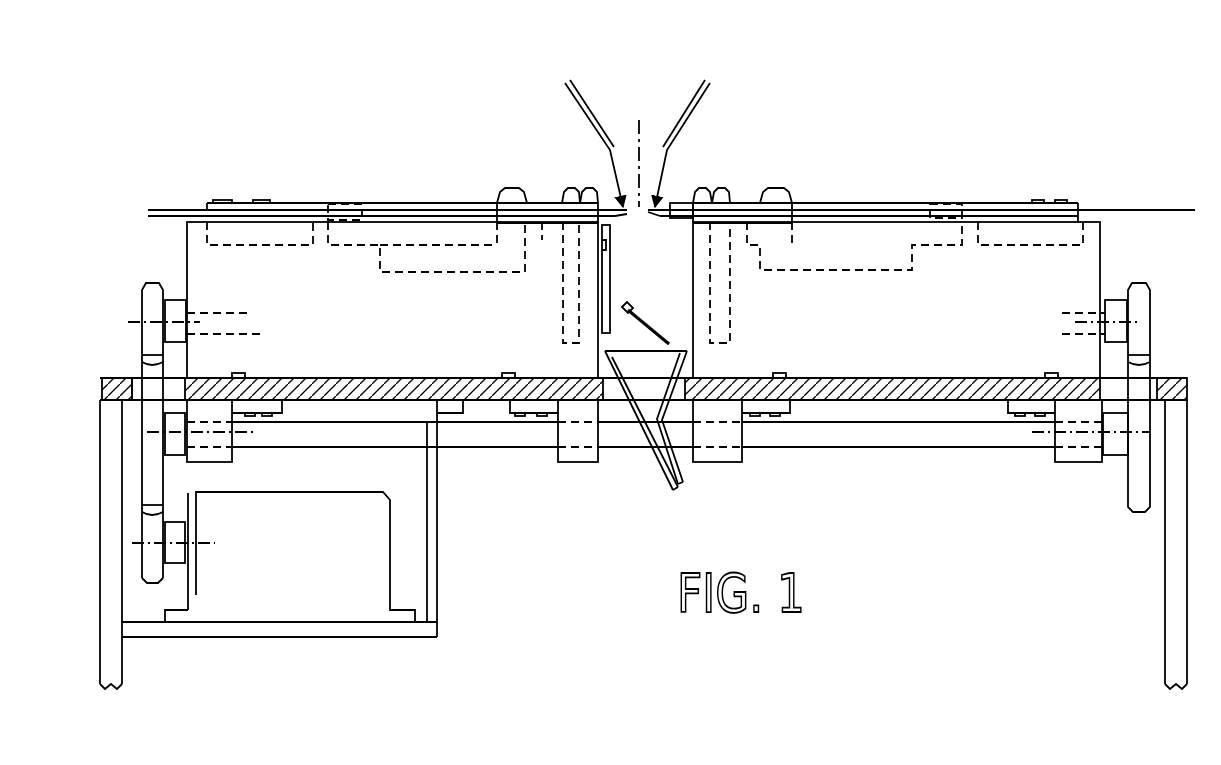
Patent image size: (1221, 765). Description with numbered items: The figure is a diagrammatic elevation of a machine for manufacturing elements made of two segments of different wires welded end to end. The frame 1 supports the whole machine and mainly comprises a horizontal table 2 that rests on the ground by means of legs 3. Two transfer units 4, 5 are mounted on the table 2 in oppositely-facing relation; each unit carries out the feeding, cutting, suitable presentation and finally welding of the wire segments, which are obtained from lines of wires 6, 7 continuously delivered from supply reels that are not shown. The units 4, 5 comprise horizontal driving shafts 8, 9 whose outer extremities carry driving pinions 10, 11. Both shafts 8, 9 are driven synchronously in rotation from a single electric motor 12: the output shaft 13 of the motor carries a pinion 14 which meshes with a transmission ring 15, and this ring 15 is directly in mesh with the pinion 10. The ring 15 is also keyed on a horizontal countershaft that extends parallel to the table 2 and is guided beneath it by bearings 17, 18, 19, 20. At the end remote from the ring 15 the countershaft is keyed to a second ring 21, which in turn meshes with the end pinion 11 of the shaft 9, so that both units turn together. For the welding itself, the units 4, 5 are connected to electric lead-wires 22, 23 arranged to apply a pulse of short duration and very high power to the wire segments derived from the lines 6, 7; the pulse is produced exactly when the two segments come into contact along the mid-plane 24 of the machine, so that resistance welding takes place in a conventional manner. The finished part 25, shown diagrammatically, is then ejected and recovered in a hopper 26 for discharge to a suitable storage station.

The frame 1 is at (1163, 377).
The horizontal table 2 is at (881, 400).
The legs 3 is at (107, 412).
The unit 4 is at (181, 249).
The unit 5 is at (1105, 257).
The line of wire 6 is at (157, 212).
The line of wire 7 is at (1114, 209).
The horizontal driving shaft 8 is at (224, 320).
The horizontal driving shaft 9 is at (1087, 315).
The driving pinion 10 is at (133, 290).
The driving pinion 11 is at (1129, 284).
The electric motor 12 is at (300, 571).
The output shaft 13 is at (172, 541).
The pinion 14 is at (143, 577).
The transmission ring 15 is at (156, 486).
The bearing 17 is at (228, 458).
The bearing 18 is at (557, 458).
The bearing 19 is at (743, 458).
The bearing 20 is at (1057, 457).
The second ring 21 is at (1133, 487).
The electric lead-wire 22 is at (589, 118).
The electric lead-wire 23 is at (687, 118).
The mid-plane 24 is at (641, 140).
The part 25 is at (652, 316).
The hopper 26 is at (665, 477).